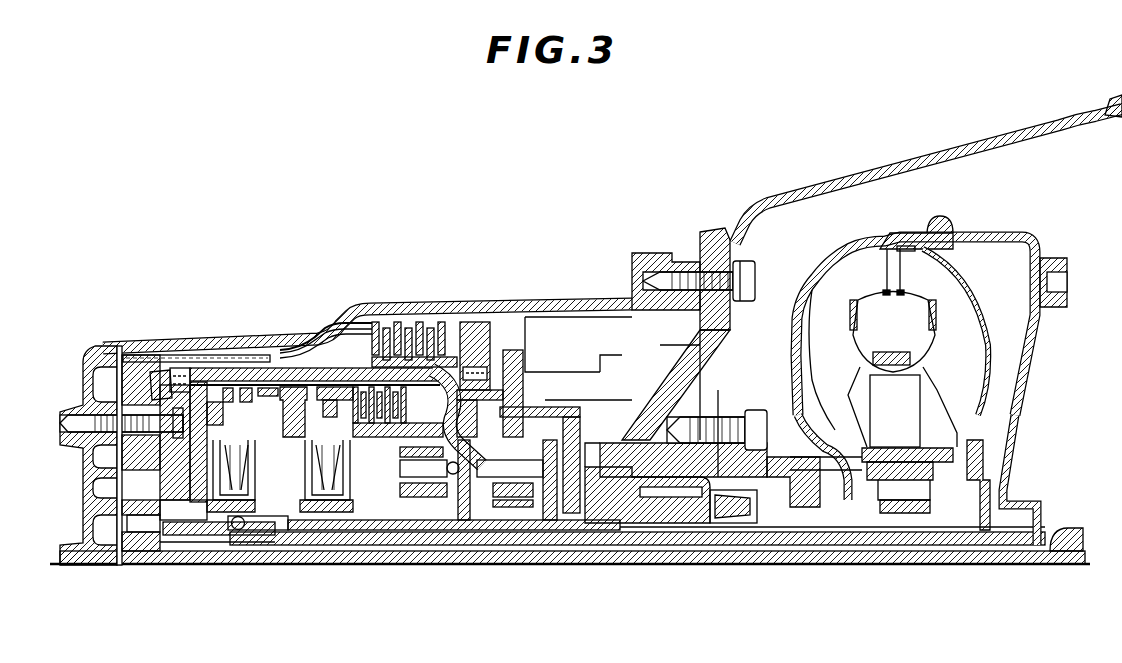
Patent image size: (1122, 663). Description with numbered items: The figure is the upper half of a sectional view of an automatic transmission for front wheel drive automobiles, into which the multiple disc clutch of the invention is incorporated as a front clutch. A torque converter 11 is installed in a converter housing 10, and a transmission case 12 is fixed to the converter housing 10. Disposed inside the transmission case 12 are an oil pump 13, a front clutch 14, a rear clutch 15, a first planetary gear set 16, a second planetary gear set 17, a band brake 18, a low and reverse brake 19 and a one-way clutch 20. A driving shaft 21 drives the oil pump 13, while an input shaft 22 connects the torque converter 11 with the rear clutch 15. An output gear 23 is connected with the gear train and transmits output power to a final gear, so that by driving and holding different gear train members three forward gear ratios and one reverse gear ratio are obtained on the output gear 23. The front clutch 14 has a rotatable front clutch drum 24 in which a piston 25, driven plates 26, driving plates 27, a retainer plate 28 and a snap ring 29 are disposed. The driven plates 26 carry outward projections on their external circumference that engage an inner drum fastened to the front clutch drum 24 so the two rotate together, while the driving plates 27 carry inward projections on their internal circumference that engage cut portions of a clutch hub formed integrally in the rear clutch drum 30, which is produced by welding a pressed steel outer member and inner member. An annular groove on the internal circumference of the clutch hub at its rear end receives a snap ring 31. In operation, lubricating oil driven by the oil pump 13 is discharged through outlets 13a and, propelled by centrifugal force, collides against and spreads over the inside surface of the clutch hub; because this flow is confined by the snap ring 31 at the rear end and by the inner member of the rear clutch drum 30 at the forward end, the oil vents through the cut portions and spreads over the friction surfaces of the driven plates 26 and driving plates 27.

The converter housing 10 is at (972, 145).
The torque converter 11 is at (980, 227).
The transmission case 12 is at (378, 309).
The oil pump 13 is at (97, 490).
The outlets 13a is at (300, 531).
The front clutch 14 is at (212, 368).
The rear clutch 15 is at (318, 338).
The first planetary gear set 16 is at (442, 330).
The second planetary gear set 17 is at (528, 407).
The band brake 18 is at (228, 362).
The low and reverse brake 19 is at (412, 322).
The one-way clutch 20 is at (487, 323).
The driving shaft 21 is at (568, 564).
The input shaft 22 is at (774, 545).
The output gear 23 is at (671, 487).
The front clutch drum 24 is at (197, 352).
The piston 25 is at (170, 344).
The driven plates 26 is at (247, 362).
The driving plates 27 is at (276, 500).
The retainer plate 28 is at (281, 368).
The snap ring 29 is at (298, 352).
The rear clutch drum 30 is at (342, 352).
The snap ring 31 is at (235, 440).